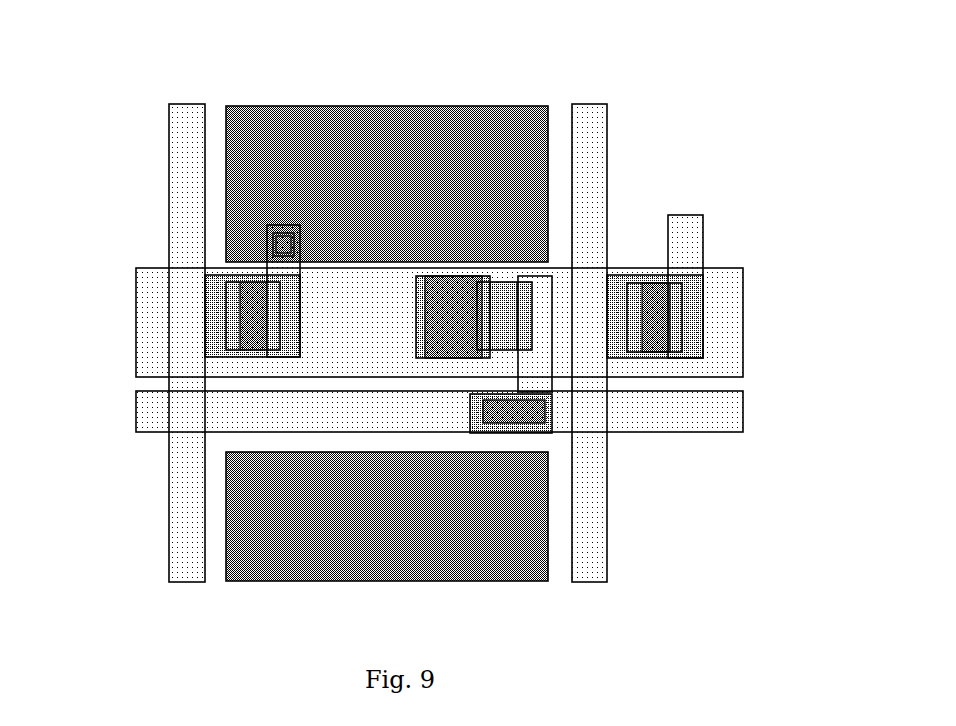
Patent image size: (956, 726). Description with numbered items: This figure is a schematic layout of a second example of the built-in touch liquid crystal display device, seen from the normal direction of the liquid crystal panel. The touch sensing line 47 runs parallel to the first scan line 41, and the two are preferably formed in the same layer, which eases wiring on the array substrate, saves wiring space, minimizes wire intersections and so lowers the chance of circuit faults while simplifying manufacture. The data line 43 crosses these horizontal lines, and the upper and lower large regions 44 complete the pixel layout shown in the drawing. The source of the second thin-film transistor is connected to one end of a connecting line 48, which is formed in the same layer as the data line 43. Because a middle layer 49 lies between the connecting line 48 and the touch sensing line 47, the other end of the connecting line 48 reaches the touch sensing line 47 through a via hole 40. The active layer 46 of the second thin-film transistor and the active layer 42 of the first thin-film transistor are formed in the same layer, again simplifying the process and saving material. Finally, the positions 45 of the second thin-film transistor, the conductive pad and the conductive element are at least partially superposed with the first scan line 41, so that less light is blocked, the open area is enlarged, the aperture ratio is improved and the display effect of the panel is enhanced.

The via hole 40 is at (513, 422).
The first scan line 41 is at (141, 330).
The active layer of the first thin-film transistor 42 is at (242, 304).
The data line 43 is at (189, 204).
The capacitor plate 44 is at (230, 160).
The positions of the second thin-film transistor, the conductive pad and the conduct 45 is at (427, 334).
The active layer of the second thin-film transistor 46 is at (510, 326).
The touch sensing line 47 is at (729, 422).
The connecting line 48 is at (546, 373).
The middle layer 49 is at (553, 437).